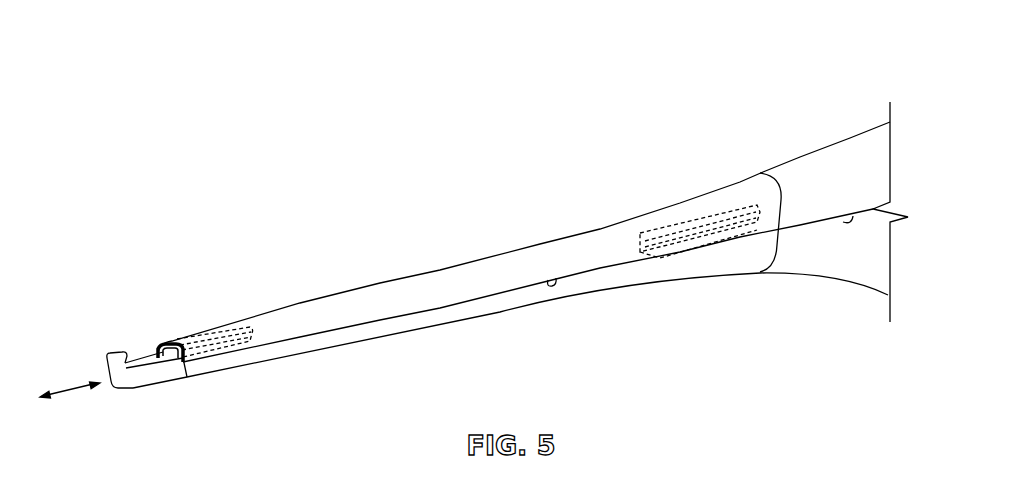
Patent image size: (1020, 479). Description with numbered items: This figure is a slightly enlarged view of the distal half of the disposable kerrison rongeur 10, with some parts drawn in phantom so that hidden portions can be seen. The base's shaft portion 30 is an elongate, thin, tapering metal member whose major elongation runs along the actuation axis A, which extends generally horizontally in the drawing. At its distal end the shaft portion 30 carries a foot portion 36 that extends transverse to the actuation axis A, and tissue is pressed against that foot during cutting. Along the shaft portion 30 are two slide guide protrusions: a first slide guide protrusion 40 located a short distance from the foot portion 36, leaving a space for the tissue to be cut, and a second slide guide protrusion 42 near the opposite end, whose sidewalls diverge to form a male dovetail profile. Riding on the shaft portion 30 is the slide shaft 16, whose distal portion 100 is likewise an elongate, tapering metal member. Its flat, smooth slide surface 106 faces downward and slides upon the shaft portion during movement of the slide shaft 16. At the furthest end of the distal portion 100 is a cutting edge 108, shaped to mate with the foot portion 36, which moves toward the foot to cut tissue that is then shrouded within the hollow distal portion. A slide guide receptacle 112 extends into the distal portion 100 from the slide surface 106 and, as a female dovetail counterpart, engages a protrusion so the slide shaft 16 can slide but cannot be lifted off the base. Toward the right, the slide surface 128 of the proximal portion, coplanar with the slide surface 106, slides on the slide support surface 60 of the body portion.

The disposable kerrison rongeur 10 is at (830, 73).
The slide shaft 16 is at (776, 146).
The shaft portion 30 is at (516, 312).
The foot portion 36 is at (112, 354).
The first slide guide protrusion 40 is at (231, 325).
The second slide guide protrusion 42 is at (685, 216).
The slide support surface 60 is at (803, 229).
The distal portion 100 is at (348, 292).
The slide surface 106 is at (556, 278).
The cutting edge 108 is at (155, 345).
The slide guide receptacle 112 is at (668, 250).
The slide surface 128 is at (853, 216).
The actuation axis A is at (72, 386).